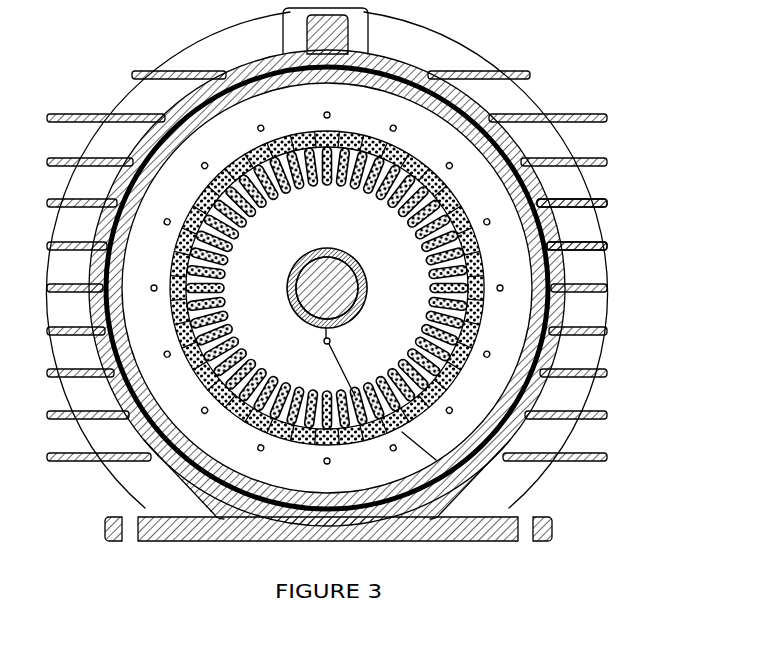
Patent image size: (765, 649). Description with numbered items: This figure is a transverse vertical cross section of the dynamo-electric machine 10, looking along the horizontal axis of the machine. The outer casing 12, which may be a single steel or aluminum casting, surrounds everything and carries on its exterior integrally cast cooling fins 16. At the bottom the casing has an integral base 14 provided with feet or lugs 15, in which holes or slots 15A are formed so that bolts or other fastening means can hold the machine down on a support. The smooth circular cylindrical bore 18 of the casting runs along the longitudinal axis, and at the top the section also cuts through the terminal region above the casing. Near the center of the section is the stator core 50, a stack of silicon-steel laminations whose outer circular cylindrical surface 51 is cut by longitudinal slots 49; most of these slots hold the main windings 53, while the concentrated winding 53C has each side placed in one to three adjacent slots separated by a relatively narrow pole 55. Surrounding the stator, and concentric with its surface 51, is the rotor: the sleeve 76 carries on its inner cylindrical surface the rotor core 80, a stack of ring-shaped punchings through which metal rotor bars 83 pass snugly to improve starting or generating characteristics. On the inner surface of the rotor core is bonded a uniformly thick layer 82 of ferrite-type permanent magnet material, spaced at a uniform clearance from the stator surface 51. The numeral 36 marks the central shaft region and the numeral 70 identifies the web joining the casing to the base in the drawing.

The dynamo-electric machine 10 is at (593, 613).
The outer casing 12 is at (372, 13).
The base 14 is at (500, 508).
The feet or lugs 15 is at (148, 517).
The holes or slots 15A is at (525, 542).
The cooling fins 16 is at (118, 116).
The circular cylindrical bore 18 is at (283, 50).
The shaft 36 is at (362, 309).
The longitudinal slots 49 is at (289, 284).
The stator core 50 is at (403, 316).
The outer circular cylindrical surface 51 is at (320, 338).
The main windings 53 is at (523, 152).
The concentrated winding 53C is at (373, 57).
The pole 55 is at (357, 148).
The support web 70 is at (468, 473).
The sleeve 76 is at (557, 199).
The rotor core 80 is at (568, 242).
The layer of permanent magnetic material 82 is at (557, 284).
The metal rotor bars 83 is at (455, 412).